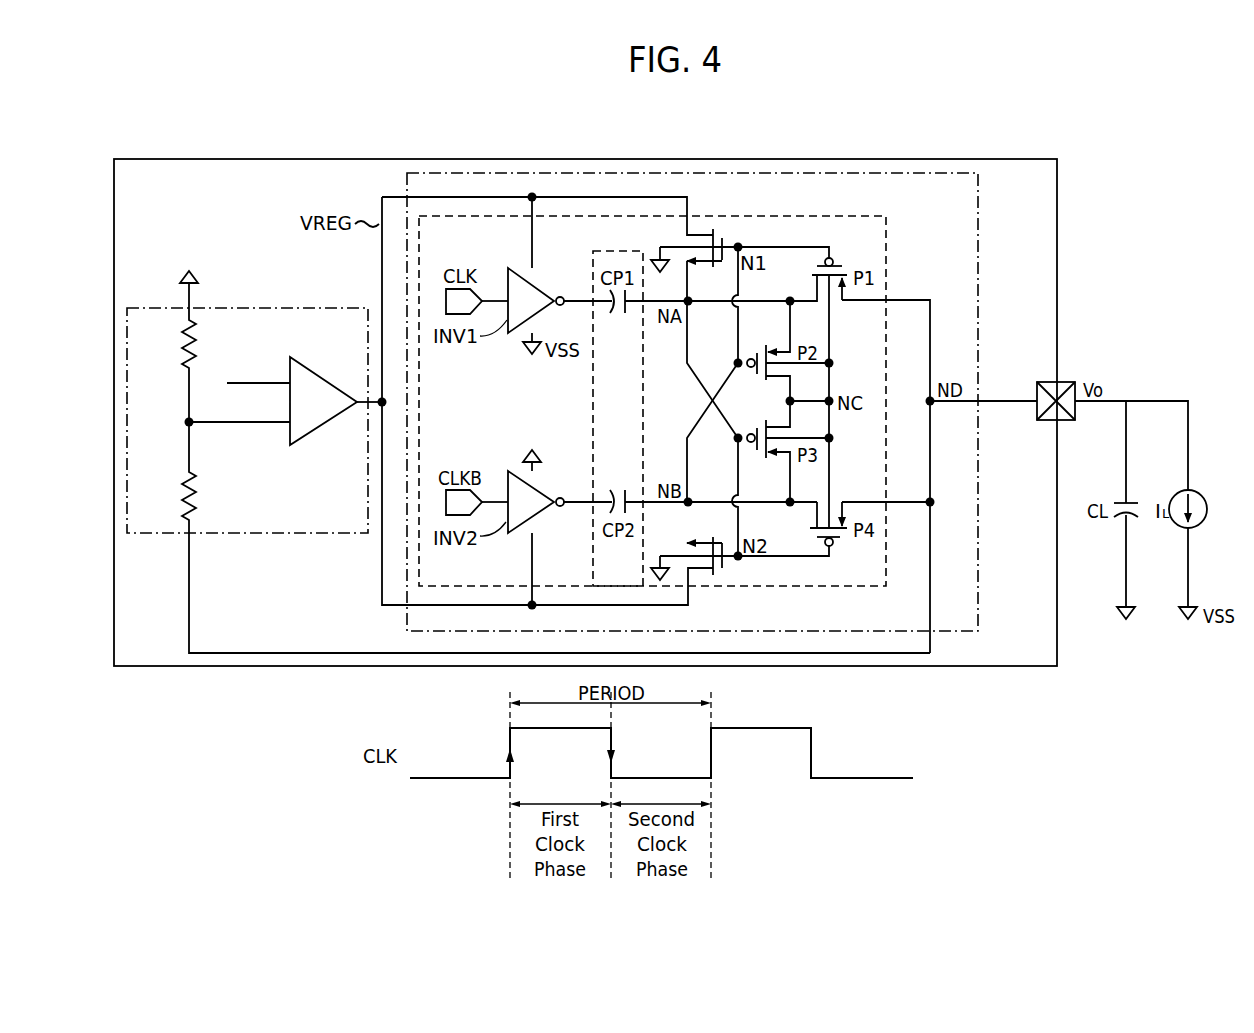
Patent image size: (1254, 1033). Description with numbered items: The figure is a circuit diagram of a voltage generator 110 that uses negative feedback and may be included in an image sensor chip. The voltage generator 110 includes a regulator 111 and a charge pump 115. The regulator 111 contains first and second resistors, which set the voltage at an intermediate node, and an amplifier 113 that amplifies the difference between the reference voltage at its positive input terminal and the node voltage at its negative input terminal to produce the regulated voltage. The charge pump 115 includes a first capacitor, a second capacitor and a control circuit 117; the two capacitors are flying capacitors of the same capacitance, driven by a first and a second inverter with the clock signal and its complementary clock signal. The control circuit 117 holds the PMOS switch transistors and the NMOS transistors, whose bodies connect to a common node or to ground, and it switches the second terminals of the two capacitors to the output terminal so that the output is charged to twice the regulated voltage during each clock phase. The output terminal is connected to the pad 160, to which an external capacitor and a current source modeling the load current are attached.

The voltage generator 110 is at (818, 159).
The regulator 111 is at (528, 461).
The amplifier 113 is at (327, 375).
The charge pump 115 is at (980, 223).
The control circuit 117 is at (888, 240).
The pad 160 is at (1052, 421).